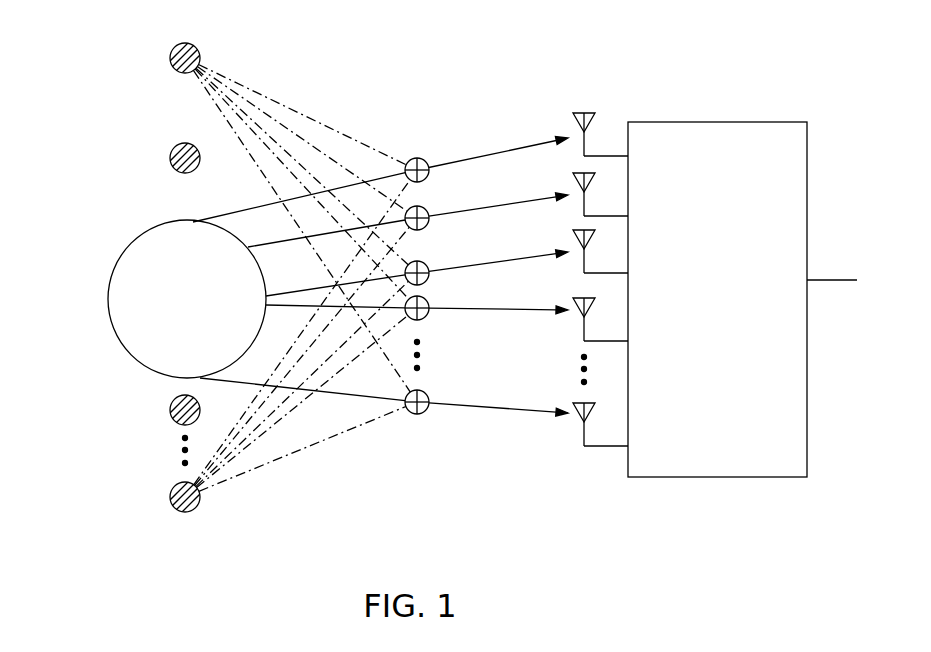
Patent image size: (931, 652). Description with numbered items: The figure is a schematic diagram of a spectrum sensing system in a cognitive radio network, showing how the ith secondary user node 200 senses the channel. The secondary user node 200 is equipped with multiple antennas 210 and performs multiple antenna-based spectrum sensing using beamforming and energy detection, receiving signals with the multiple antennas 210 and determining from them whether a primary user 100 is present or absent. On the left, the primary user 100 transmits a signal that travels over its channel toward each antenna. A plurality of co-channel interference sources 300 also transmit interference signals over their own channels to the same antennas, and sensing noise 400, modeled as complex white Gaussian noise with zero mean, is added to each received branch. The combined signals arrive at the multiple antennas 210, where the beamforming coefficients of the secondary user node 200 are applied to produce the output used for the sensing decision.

The primary user 100 is at (108, 299).
The secondary user node 200 is at (718, 122).
The multiple antennas 210 is at (585, 96).
The co-channel interference sources 300 is at (170, 60).
The sensing noise 400 is at (418, 128).